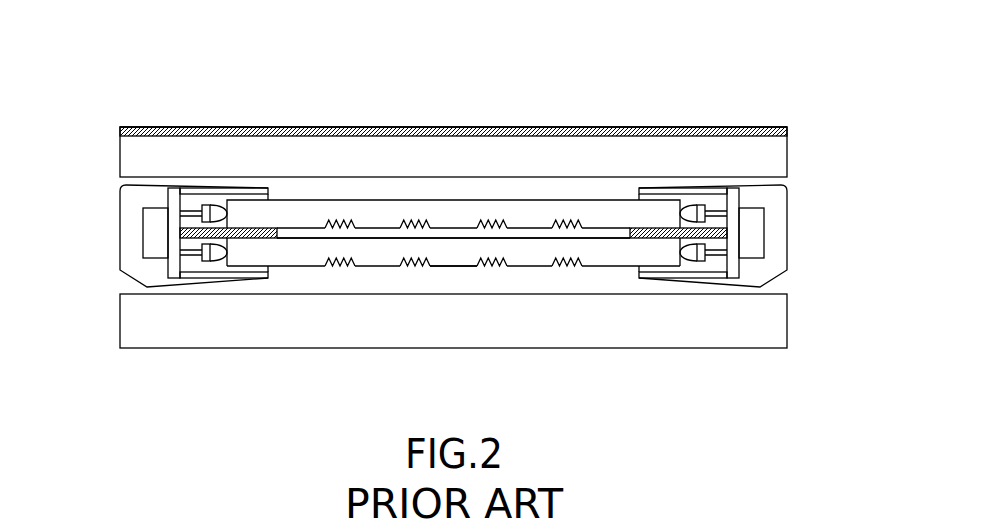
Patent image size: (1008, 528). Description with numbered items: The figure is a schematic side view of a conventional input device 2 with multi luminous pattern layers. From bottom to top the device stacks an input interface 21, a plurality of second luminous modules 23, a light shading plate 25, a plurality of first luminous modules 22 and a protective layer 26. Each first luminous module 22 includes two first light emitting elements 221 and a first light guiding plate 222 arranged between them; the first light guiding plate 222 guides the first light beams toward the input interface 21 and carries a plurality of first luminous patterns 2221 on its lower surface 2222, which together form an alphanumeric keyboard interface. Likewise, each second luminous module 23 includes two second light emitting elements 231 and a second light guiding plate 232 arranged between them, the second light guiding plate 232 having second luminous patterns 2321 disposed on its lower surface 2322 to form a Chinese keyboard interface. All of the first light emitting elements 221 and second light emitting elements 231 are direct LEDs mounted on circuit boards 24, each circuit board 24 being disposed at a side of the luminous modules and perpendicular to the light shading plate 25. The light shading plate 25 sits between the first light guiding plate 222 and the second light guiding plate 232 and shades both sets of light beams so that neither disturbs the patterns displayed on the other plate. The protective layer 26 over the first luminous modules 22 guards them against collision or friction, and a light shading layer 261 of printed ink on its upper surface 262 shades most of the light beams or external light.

The input device with multi luminous pattern layers 2 is at (623, 52).
The input interface 21 is at (207, 338).
The first luminous module 22 is at (533, 205).
The first light emitting element 221 is at (207, 203).
The first light guiding plate 222 is at (442, 213).
The first luminous pattern 2221 is at (408, 231).
The lower surface of the first light guiding plate 2222 is at (378, 228).
The second luminous module 23 is at (460, 250).
The second light emitting element 231 is at (203, 253).
The second light guiding plate 232 is at (592, 255).
The second luminous pattern 2321 is at (495, 262).
The lower surface of the second light guiding plate 2322 is at (530, 267).
The circuit board 24 is at (175, 228).
The light shading plate 25 is at (240, 196).
The protective layer 26 is at (668, 143).
The light shading layer 261 is at (437, 127).
The upper surface of the protective layer 262 is at (242, 127).